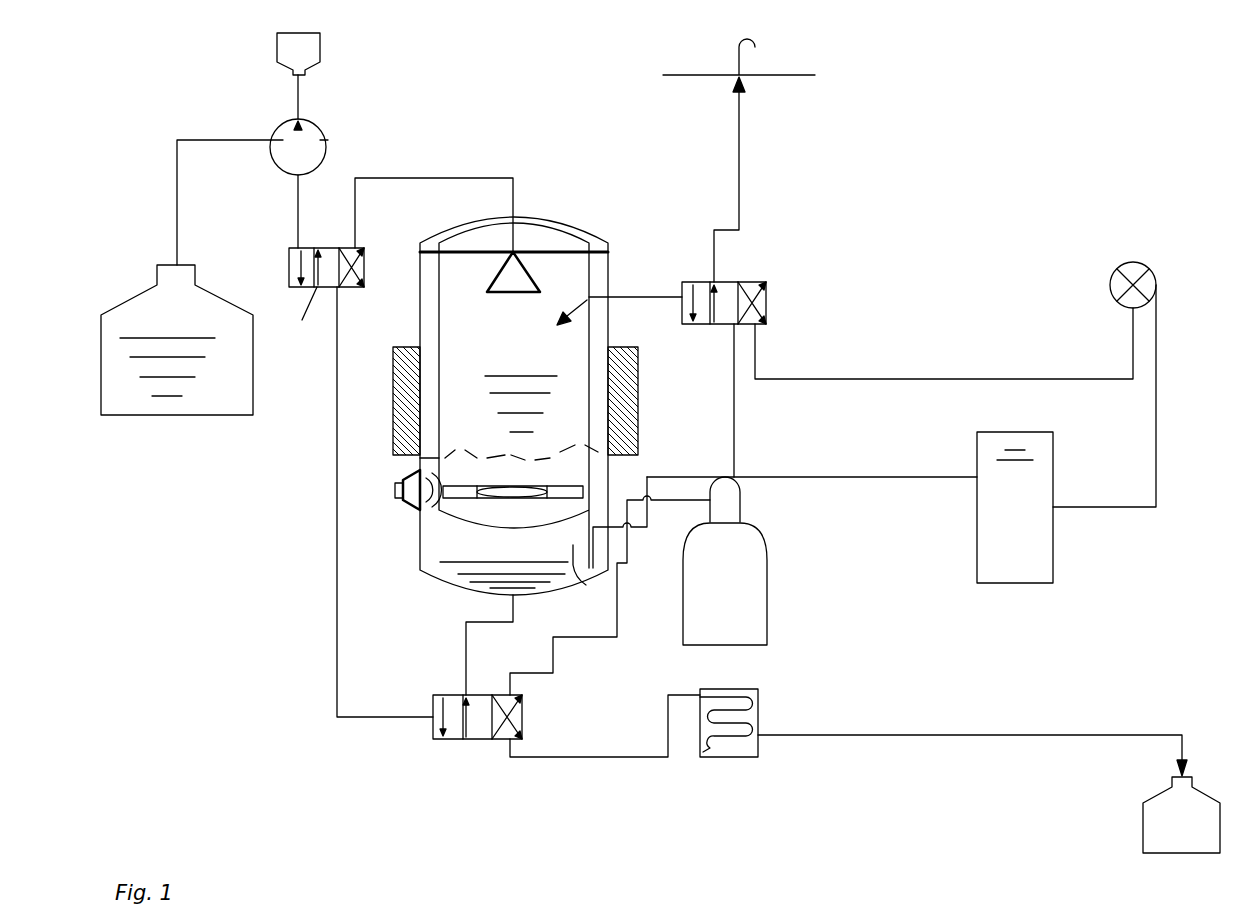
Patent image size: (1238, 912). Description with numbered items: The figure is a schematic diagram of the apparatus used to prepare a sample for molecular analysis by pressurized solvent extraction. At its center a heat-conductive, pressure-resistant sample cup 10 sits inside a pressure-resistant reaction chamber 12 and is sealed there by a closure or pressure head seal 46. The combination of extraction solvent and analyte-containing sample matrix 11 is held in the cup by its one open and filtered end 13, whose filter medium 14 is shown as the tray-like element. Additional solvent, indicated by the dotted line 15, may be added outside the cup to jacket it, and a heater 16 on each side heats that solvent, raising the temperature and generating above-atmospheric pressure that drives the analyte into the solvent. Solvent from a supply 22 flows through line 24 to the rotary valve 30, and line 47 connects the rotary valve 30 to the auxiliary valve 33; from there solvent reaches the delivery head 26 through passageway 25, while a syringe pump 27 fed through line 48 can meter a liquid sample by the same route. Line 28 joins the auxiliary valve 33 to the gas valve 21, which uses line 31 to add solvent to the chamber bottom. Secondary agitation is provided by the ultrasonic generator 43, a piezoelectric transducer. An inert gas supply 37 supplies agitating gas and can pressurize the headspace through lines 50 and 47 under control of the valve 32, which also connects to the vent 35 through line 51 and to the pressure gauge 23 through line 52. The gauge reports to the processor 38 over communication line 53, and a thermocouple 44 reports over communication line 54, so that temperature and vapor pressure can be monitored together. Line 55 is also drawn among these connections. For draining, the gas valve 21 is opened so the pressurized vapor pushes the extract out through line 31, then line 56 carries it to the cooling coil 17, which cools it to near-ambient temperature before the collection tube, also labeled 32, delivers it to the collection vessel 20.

The sample cup 10 is at (587, 357).
The sample matrix and extraction solvent 11 is at (515, 376).
The reaction chamber 12 is at (580, 228).
The open and filtered end 13 is at (513, 532).
The filter medium 14 is at (468, 498).
The jacketing solvent 15 is at (520, 455).
The heater 16 is at (393, 385).
The cooling coil 17 is at (712, 757).
The collection vessel 20 is at (1207, 827).
The gas valve 21 is at (443, 739).
The solvent supply 22 is at (190, 294).
The pressure gauge 23 is at (1118, 267).
The line 24 is at (177, 210).
The passageway 25 is at (458, 178).
The delivery head 26 is at (515, 275).
The syringe pump 27 is at (277, 48).
The line 28 is at (337, 497).
The rotary valve 30 is at (325, 140).
The line 31 is at (463, 650).
The valve 32 is at (768, 305).
The auxiliary valve 33 is at (303, 318).
The vent 35 is at (740, 64).
The gas supply 37 is at (745, 602).
The processor 38 is at (1030, 519).
The ultrasonic generator 43 is at (400, 500).
The thermocouple 44 is at (586, 585).
The closure 46 is at (587, 233).
The line 47 is at (298, 236).
The line 48 is at (298, 111).
The line 50 is at (734, 400).
The line 51 is at (739, 187).
The line 52 is at (965, 377).
The communication line 53 is at (1156, 460).
The communication line 54 is at (913, 477).
The line 55 is at (572, 637).
The line 56 is at (543, 757).